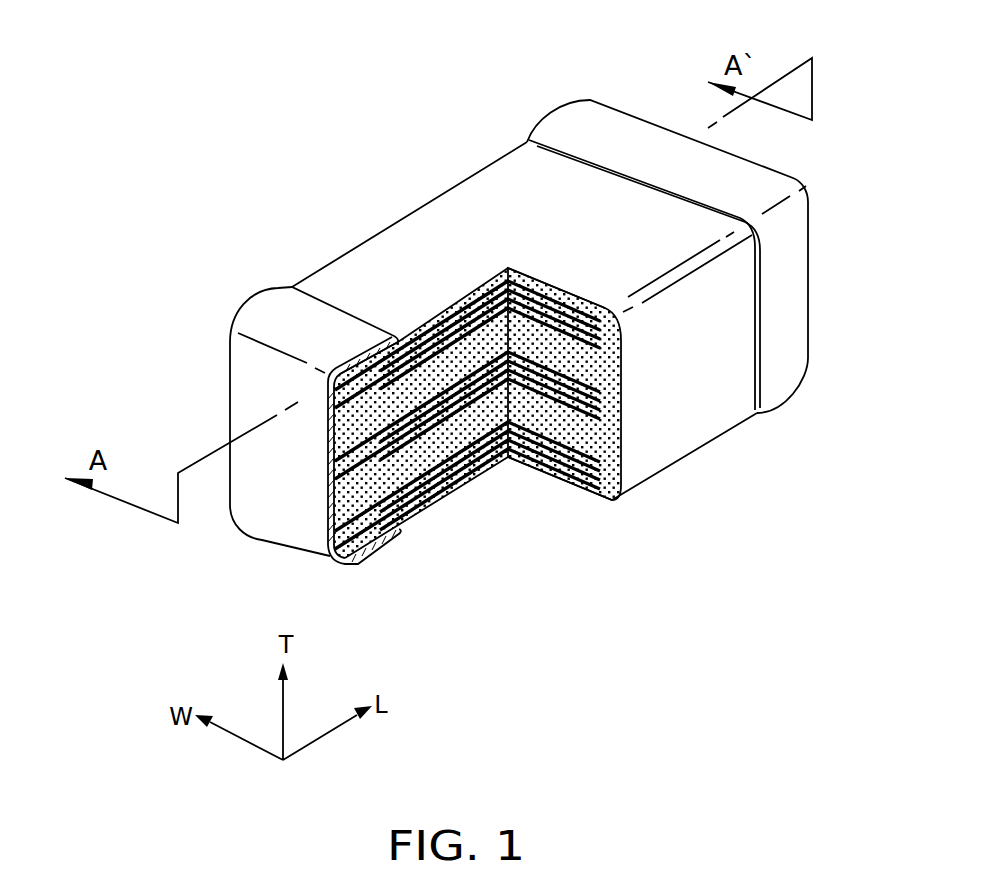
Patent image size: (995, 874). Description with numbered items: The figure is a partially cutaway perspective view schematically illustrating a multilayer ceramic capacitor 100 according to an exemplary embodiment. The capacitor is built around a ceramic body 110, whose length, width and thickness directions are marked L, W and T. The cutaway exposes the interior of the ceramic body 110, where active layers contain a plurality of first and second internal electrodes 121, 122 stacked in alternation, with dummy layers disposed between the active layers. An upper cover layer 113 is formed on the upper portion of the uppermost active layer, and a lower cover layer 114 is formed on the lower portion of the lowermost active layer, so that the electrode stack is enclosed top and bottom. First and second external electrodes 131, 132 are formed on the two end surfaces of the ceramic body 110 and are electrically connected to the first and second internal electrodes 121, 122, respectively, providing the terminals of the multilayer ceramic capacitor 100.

The multilayer ceramic capacitor 100 is at (289, 43).
The ceramic body 110 is at (322, 226).
The upper cover layer 113 is at (493, 290).
The lower cover layer 114 is at (370, 539).
The first internal electrode 121 is at (420, 357).
The second internal electrode 122 is at (462, 318).
The first external electrode 131 is at (260, 323).
The second external electrode 132 is at (610, 120).